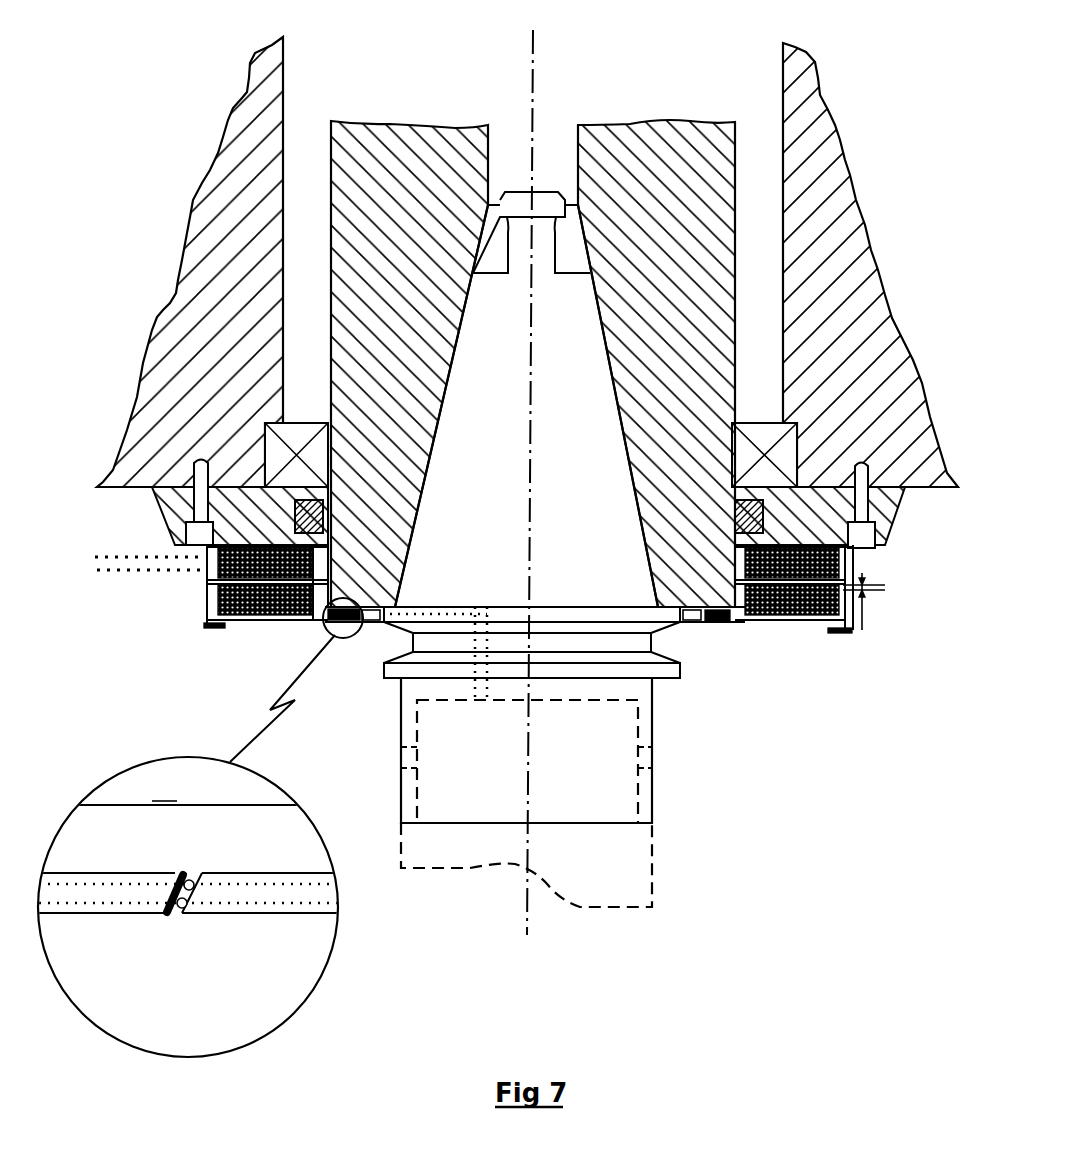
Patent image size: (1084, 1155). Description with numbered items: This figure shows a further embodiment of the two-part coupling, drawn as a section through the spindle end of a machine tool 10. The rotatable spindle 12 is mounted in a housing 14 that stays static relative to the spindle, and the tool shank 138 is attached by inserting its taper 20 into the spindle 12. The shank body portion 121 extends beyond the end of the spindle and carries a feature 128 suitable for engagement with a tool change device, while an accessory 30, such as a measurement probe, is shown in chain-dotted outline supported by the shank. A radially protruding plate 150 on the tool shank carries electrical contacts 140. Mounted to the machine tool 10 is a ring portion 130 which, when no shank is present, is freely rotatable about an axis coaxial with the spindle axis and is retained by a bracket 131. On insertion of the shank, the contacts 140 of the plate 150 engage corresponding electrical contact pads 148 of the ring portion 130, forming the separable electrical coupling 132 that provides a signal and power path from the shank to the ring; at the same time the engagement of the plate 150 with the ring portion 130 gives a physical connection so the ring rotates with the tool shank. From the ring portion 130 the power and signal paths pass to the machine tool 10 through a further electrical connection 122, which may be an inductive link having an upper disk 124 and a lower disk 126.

The machine tool 10 is at (858, 72).
The spindle 12 is at (397, 121).
The housing 14 is at (242, 137).
The taper fitting 20 is at (481, 500).
The accessory 30 is at (635, 850).
The shank body portion 121 is at (663, 675).
The further electrical connection 122 is at (208, 587).
The upper disk 124 is at (855, 575).
The lower disk 126 is at (795, 622).
The feature for engagement with a tool change device 128 is at (345, 641).
The ring portion 130 is at (283, 620).
The bracket 131 is at (210, 632).
The separable electrical coupling 132 is at (163, 928).
The tool shank 138 is at (705, 735).
The electrical contacts 140 is at (190, 879).
The electrical contact pads 148 is at (172, 882).
The radially protruding plate 150 is at (683, 620).